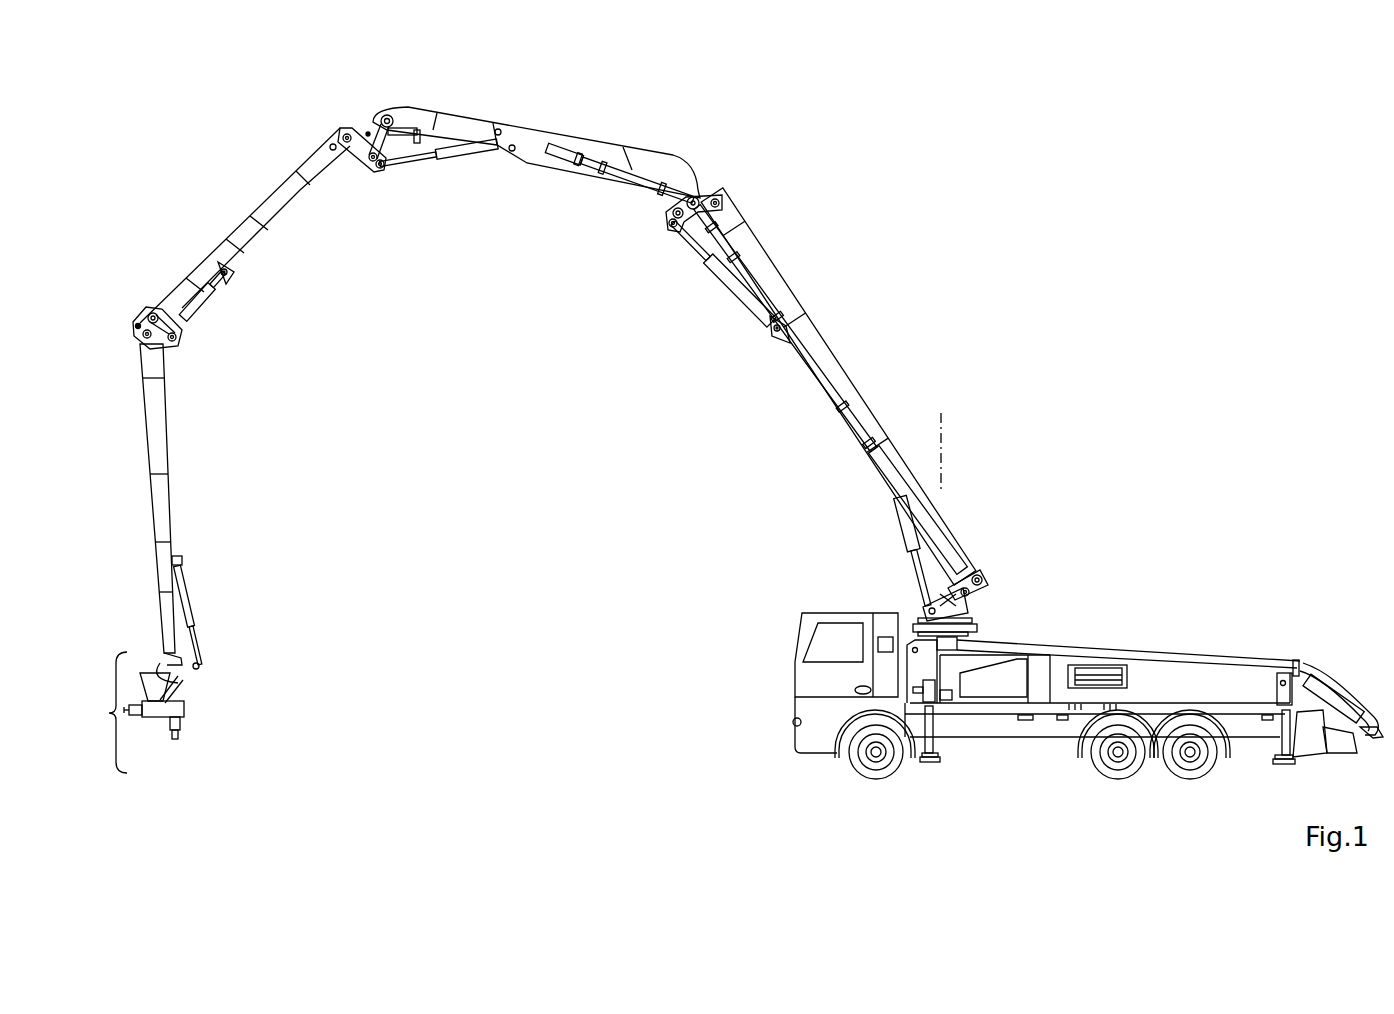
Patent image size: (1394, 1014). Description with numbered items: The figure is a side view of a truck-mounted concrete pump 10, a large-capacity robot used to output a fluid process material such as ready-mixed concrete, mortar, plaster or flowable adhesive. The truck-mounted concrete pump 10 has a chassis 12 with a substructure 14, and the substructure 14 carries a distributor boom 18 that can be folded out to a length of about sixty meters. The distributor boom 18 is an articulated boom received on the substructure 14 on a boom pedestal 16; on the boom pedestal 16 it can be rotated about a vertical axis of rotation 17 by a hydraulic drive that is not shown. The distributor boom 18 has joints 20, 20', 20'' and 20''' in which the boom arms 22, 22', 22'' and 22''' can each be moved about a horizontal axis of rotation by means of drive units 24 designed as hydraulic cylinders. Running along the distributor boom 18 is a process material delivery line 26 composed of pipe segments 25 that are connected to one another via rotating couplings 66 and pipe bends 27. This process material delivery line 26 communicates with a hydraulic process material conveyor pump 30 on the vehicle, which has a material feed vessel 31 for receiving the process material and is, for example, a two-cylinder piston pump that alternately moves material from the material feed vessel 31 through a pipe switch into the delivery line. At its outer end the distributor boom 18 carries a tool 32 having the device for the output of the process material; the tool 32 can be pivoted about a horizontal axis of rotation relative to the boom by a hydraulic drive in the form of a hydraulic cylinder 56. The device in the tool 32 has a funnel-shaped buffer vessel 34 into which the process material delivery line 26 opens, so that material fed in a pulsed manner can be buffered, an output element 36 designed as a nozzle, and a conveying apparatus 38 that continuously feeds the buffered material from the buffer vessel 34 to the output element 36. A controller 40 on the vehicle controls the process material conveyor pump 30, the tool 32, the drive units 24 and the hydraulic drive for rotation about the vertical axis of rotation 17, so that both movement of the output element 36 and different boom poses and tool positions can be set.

The truck-mounted concrete pump 10 is at (1090, 236).
The chassis 12 is at (1008, 740).
The substructure 14 is at (955, 728).
The boom pedestal 16 is at (962, 620).
The vertical axis of rotation 17 is at (955, 447).
The distributor boom 18 is at (222, 195).
The joint 20 is at (147, 302).
The joint 20' is at (370, 117).
The joint 20'' is at (703, 169).
The joint 20''' is at (1012, 580).
The boom arm 22 is at (183, 513).
The boom arm 22' is at (263, 225).
The boom arm 22'' is at (536, 172).
The boom arm 22''' is at (838, 386).
The drive unit 24 is at (212, 298).
The pipe segment 25 is at (630, 170).
The process material delivery line 26 is at (832, 405).
The pipe bend 27 is at (675, 226).
The process material conveyor pump 30 is at (1320, 740).
The material feed vessel 31 is at (1330, 683).
The tool 32 is at (129, 712).
The buffer vessel 34 is at (180, 690).
The output element 36 is at (182, 730).
The conveying apparatus 38 is at (160, 720).
The controller 40 is at (885, 637).
The hydraulic cylinder 56 is at (188, 600).
The rotating coupling 66 is at (706, 192).